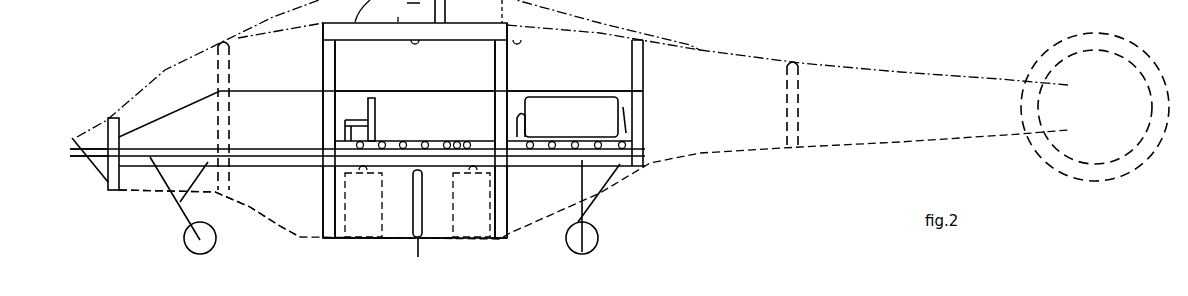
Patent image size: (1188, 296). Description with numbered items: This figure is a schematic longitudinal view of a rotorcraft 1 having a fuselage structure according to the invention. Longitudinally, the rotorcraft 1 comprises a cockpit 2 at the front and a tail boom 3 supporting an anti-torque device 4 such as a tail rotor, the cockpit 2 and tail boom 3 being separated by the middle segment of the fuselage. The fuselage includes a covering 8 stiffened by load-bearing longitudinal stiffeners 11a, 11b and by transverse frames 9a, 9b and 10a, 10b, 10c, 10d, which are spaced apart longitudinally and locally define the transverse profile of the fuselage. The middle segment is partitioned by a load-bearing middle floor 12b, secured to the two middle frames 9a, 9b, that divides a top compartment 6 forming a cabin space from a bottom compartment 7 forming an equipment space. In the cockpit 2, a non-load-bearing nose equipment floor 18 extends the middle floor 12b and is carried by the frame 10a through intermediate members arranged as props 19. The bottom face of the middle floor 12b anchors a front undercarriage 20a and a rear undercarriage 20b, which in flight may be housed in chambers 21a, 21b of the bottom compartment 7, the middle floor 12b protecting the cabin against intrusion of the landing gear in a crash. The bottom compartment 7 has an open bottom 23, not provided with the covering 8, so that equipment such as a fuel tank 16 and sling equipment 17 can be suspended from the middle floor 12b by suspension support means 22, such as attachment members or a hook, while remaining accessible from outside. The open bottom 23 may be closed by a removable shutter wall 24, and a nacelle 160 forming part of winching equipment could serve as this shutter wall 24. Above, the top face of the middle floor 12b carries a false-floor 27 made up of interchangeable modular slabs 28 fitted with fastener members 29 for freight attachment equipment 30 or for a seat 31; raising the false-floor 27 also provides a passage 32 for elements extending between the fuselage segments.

The rotorcraft 1 is at (738, 230).
The cockpit 2 is at (166, 70).
The tail boom 3 is at (878, 50).
The anti-torque device 4 is at (1106, 160).
The top compartment 6 is at (415, 69).
The bottom compartment 7 is at (437, 211).
The covering 8 is at (272, 220).
The transverse frame 9a is at (323, 48).
The transverse frame 9b is at (507, 58).
The transverse frame 10a is at (106, 122).
The transverse frame 10b is at (231, 120).
The transverse frame 10c is at (645, 55).
The transverse frame 10d is at (800, 88).
The longitudinal stiffener 11a is at (592, 70).
The longitudinal stiffener 11b is at (606, 73).
The middle floor 12b is at (312, 167).
The fuel tank 16 is at (363, 205).
The nacelle 160 is at (471, 205).
The sling equipment 17 is at (424, 230).
The nose equipment floor 18 is at (80, 143).
The props 19 is at (92, 167).
The front undercarriage 20a is at (184, 238).
The rear undercarriage 20b is at (598, 238).
The chamber 21a is at (319, 202).
The chamber 21b is at (524, 202).
The suspension support means 22 is at (413, 200).
The open bottom 23 is at (398, 225).
The shutter wall 24 is at (356, 240).
The false-floor 27 is at (398, 135).
The modular slabs 28 is at (440, 139).
The fastener members 29 is at (520, 128).
The freight attachment equipment 30 is at (611, 117).
The seat 31 is at (370, 118).
The passage 32 is at (458, 139).